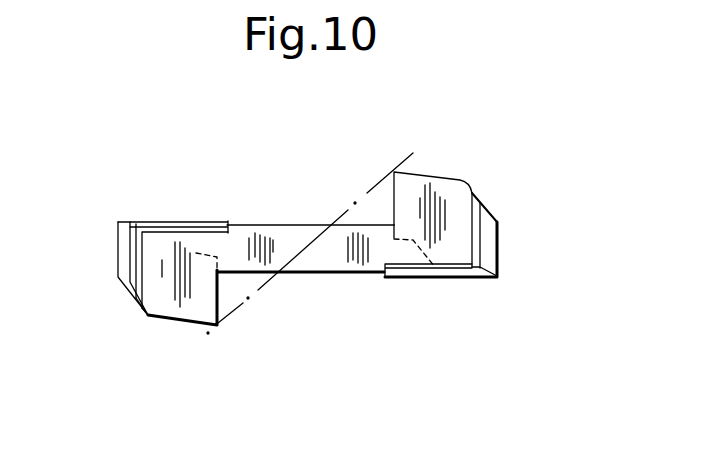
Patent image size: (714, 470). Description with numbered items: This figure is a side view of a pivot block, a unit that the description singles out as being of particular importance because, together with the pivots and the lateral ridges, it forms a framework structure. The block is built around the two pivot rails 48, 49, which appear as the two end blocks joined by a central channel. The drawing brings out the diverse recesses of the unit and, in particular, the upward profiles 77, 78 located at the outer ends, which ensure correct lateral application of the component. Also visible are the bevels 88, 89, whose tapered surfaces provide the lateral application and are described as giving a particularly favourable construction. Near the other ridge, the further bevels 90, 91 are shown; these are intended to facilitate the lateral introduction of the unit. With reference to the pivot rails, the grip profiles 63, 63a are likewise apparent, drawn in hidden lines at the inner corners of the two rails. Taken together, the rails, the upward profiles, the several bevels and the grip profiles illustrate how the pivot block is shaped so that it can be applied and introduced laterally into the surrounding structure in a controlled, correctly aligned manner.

The pivot rail 48 is at (165, 295).
The pivot rail 49 is at (438, 190).
The grip profile 63 is at (200, 252).
The grip profile 63a is at (413, 242).
The upward profile 77 is at (120, 233).
The upward profile 78 is at (497, 258).
The bevel 88 is at (137, 260).
The bevel 89 is at (480, 233).
The bevel 90 is at (137, 283).
The bevel 91 is at (473, 199).